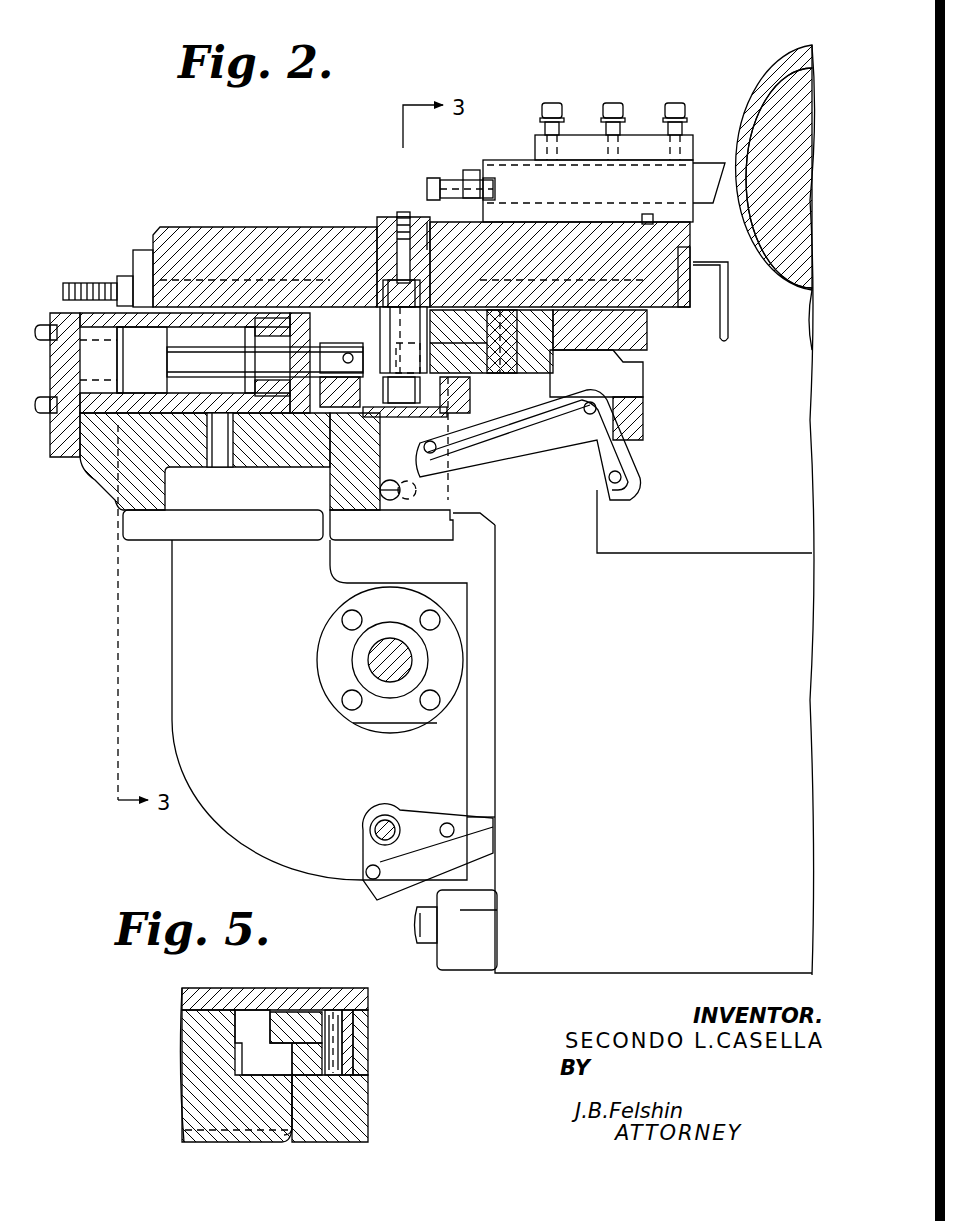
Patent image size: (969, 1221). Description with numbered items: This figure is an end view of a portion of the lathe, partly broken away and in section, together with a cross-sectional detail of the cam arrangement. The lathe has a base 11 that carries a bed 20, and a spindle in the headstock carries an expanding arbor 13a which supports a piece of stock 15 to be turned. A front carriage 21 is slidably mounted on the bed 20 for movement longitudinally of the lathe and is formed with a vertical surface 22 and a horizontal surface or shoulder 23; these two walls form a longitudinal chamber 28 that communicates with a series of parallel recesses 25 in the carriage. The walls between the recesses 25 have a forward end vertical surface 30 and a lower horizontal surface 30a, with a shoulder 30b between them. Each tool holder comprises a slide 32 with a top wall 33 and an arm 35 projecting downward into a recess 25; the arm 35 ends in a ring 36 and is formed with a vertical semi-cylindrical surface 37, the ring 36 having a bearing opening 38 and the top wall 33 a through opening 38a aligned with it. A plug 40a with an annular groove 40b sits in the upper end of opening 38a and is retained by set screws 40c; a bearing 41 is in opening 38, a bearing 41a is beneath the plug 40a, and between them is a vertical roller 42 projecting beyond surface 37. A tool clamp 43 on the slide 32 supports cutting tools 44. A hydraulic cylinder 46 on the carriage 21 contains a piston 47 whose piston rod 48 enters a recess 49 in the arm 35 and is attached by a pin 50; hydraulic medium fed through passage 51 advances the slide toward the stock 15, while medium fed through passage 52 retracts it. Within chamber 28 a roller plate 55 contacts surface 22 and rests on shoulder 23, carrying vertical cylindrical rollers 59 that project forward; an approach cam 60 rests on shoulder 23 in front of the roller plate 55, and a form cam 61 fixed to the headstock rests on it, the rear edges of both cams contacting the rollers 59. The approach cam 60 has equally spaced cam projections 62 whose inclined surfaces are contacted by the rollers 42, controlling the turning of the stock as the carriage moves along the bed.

In FIG. 2, the base 11 is at (528, 958).
In FIG. 2, the expanding arbor 13a is at (806, 268).
In FIG. 2, the piece of stock 15 is at (798, 60).
In FIG. 2, the bed 20 is at (552, 437).
In FIG. 2, the front carriage 21 is at (108, 465).
In FIG. 2, the vertical surface 22 is at (550, 273).
In FIG. 2, the horizontal surface or shoulder 23 is at (462, 407).
In FIG. 2, the recess 25 is at (307, 400).
In FIG. 2, the longitudinal chamber 28 is at (507, 407).
In FIG. 5, the longitudinal chamber 28 is at (233, 1027).
In FIG. 2, the forward end vertical surface 30 is at (357, 335).
In FIG. 2, the lower horizontal surface 30a is at (404, 340).
In FIG. 2, the shoulder 30b is at (456, 439).
In FIG. 2, the slide 32 is at (674, 318).
In FIG. 2, the top wall 33 is at (190, 270).
In FIG. 2, the arm 35 is at (353, 407).
In FIG. 2, the ring 36 is at (428, 436).
In FIG. 2, the vertical semi-cylindrical surface 37 is at (377, 295).
In FIG. 2, the bearing opening 38 is at (333, 511).
In FIG. 2, the through opening 38a is at (468, 300).
In FIG. 2, the plug 40a is at (430, 222).
In FIG. 2, the annular groove 40b is at (430, 240).
In FIG. 2, the set screw 40c is at (368, 250).
In FIG. 2, the bearing 41 is at (390, 380).
In FIG. 2, the bearing 41a is at (470, 262).
In FIG. 2, the roller 42 is at (375, 412).
In FIG. 2, the tool clamp 43 is at (637, 122).
In FIG. 2, the cutting tool 44 is at (705, 175).
In FIG. 2, the hydraulic cylinder 46 is at (60, 298).
In FIG. 2, the piston 47 is at (128, 363).
In FIG. 2, the piston rod 48 is at (228, 400).
In FIG. 2, the recess 49 is at (345, 322).
In FIG. 2, the pin 50 is at (300, 420).
In FIG. 2, the passage 51 is at (46, 322).
In FIG. 2, the passage 52 is at (48, 418).
In FIG. 2, the roller plate 55 is at (525, 330).
In FIG. 5, the roller plate 55 is at (352, 1037).
In FIG. 5, the vertical cylindrical roller 59 is at (342, 1008).
In FIG. 2, the approach cam 60 is at (413, 358).
In FIG. 5, the approach cam 60 is at (307, 1062).
In FIG. 2, the form cam 61 is at (445, 320).
In FIG. 5, the form cam 61 is at (300, 1012).
In FIG. 5, the cam projection 62 is at (257, 1050).